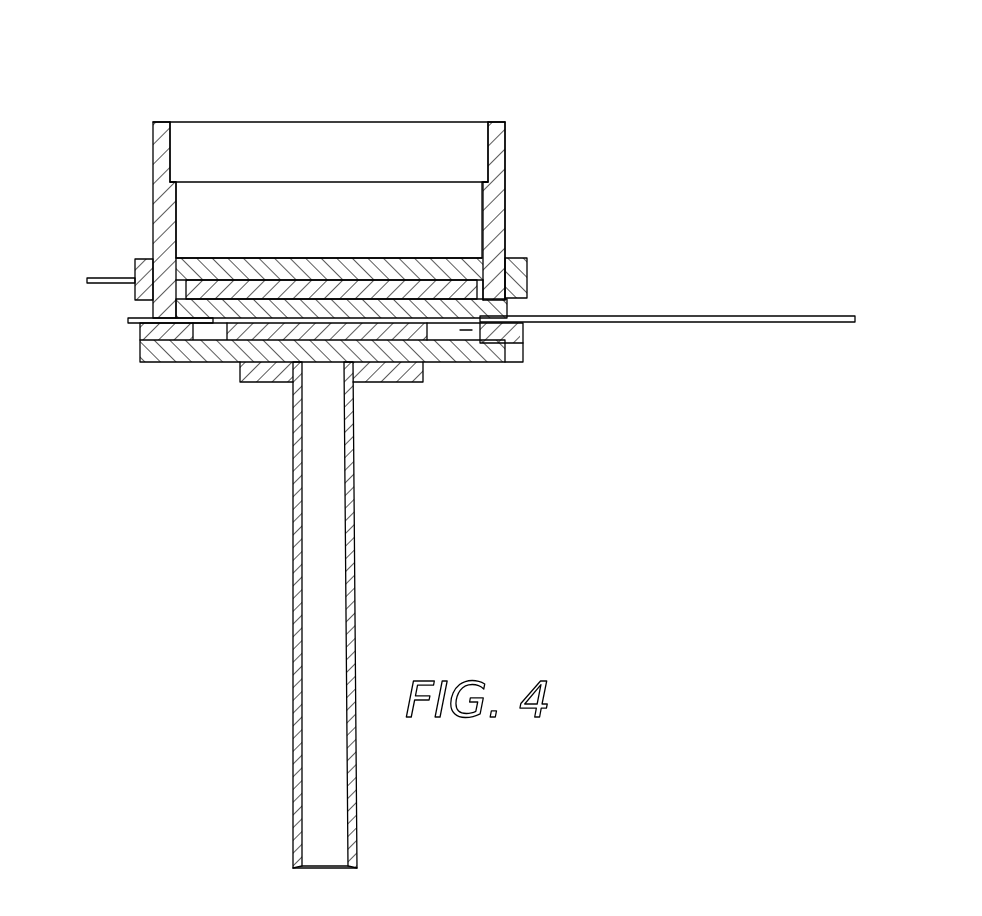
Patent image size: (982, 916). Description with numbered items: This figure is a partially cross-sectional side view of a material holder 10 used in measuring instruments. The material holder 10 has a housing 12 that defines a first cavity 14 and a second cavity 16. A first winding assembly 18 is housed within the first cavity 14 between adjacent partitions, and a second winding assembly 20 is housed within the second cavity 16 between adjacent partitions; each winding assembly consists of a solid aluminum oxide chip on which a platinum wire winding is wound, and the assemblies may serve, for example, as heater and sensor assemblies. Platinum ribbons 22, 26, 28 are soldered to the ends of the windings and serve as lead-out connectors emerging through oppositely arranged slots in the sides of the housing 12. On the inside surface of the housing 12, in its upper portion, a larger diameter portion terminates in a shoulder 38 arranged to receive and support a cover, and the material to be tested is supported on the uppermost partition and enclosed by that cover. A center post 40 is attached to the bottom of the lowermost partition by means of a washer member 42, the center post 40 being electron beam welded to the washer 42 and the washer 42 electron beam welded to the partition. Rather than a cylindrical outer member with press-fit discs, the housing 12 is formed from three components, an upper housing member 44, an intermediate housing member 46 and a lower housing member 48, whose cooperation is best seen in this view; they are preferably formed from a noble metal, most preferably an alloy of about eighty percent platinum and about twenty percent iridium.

The material holder 10 is at (440, 104).
The housing 12 is at (153, 162).
The first cavity 14 is at (452, 290).
The second cavity 16 is at (525, 337).
The first winding assembly 18 is at (484, 268).
The second winding assembly 20 is at (434, 330).
The platinum ribbon 22 is at (109, 277).
The platinum ribbon 26 is at (748, 323).
The platinum ribbon 28 is at (133, 324).
The shoulder 38 is at (172, 182).
The center post 40 is at (355, 587).
The washer member 42 is at (393, 383).
The upper housing member 44 is at (505, 145).
The intermediate housing member 46 is at (520, 270).
The lower housing member 48 is at (468, 331).